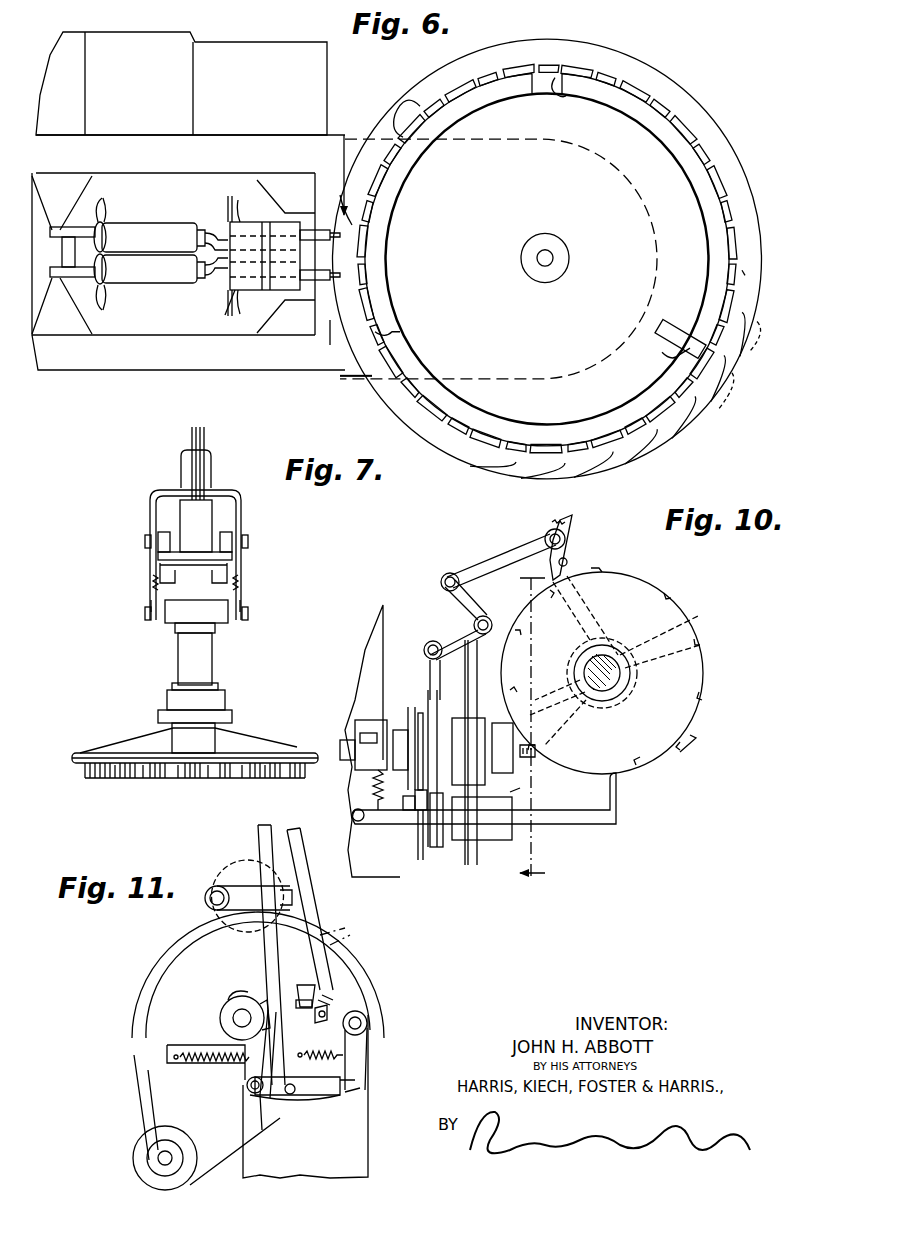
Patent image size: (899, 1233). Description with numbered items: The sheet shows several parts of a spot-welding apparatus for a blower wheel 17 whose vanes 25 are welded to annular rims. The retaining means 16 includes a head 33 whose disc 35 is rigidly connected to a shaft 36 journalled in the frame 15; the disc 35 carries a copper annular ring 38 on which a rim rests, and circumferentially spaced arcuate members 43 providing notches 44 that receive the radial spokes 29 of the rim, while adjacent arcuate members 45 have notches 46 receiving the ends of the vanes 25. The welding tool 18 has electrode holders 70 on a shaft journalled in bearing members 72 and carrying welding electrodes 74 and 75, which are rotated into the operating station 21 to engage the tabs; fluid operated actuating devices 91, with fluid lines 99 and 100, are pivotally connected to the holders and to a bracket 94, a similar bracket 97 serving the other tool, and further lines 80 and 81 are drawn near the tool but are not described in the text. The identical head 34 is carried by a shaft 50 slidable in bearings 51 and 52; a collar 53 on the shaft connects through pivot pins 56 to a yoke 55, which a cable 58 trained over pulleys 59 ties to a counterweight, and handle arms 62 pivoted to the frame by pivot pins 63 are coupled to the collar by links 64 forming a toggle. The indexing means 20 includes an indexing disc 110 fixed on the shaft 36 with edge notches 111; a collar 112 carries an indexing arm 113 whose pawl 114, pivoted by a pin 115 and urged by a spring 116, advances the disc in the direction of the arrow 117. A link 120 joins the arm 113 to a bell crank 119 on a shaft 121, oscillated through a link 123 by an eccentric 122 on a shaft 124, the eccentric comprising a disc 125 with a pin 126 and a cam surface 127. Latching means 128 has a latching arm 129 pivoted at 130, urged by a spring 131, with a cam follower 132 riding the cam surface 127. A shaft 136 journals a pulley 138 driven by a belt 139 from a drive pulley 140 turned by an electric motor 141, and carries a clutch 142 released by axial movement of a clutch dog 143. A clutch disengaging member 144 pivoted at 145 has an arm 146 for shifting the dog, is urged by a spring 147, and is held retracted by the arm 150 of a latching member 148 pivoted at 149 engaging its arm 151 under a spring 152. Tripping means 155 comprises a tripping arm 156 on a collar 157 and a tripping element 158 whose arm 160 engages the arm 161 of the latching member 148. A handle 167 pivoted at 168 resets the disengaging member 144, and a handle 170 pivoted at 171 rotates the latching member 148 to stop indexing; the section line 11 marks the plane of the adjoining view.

In FIG. 6, the retaining means 16 is at (755, 138).
In FIG. 7, the retaining means 16 is at (262, 742).
In FIG. 6, the blower wheel 17 is at (680, 380).
In FIG. 6, the welding tool 18 is at (250, 320).
In FIG. 10, the indexing means 20 is at (578, 555).
In FIG. 6, the operating station 21 is at (344, 160).
In FIG. 6, the vanes 25 is at (572, 470).
In FIG. 6, the radial spokes 29 is at (655, 324).
In FIG. 6, the head 33 is at (700, 255).
In FIG. 7, the head 34 is at (108, 740).
In FIG. 6, the disc 35 is at (700, 215).
In FIG. 7, the disc 35 is at (74, 754).
In FIG. 10, the shaft 36 is at (625, 675).
In FIG. 11, the shaft 36 is at (340, 960).
In FIG. 6, the annular ring 38 is at (660, 78).
In FIG. 7, the annular ring 38 is at (142, 772).
In FIG. 6, the arcuate members 43 is at (725, 310).
In FIG. 6, the notches 44 is at (690, 360).
In FIG. 6, the arcuate members 45 is at (540, 432).
In FIG. 7, the arcuate members 45 is at (170, 775).
In FIG. 6, the notches 46 is at (638, 440).
In FIG. 7, the notches 46 is at (205, 775).
In FIG. 7, the shaft 50 is at (208, 664).
In FIG. 7, the bearing 51 is at (225, 698).
In FIG. 7, the bearing 52 is at (225, 575).
In FIG. 7, the collar 53 is at (225, 612).
In FIG. 7, the yoke 55 is at (242, 520).
In FIG. 7, the pivot pins 56 is at (250, 616).
In FIG. 7, the cable 58 is at (215, 478).
In FIG. 7, the pulleys 59 is at (206, 437).
In FIG. 7, the arms 62 is at (240, 586).
In FIG. 7, the pivot pins 63 is at (252, 538).
In FIG. 7, the links 64 is at (245, 600).
In FIG. 6, the electrode holders 70 is at (268, 285).
In FIG. 6, the bearing members 72 is at (300, 368).
In FIG. 6, the welding electrode 74 is at (331, 332).
In FIG. 6, the welding electrode 75 is at (337, 198).
In FIG. 6, the tube 80 is at (216, 247).
In FIG. 6, the tube 81 is at (238, 254).
In FIG. 6, the actuating devices 91 is at (158, 280).
In FIG. 6, the bracket 94 is at (65, 285).
In FIG. 6, the bracket 97 is at (30, 392).
In FIG. 6, the fluid line 99 is at (116, 300).
In FIG. 6, the fluid line 100 is at (200, 290).
In FIG. 10, the indexing disc 110 is at (698, 692).
In FIG. 10, the notches 111 is at (690, 750).
In FIG. 10, the collar 112 is at (674, 628).
In FIG. 10, the indexing arm 113 is at (580, 580).
In FIG. 10, the pawl 114 is at (575, 535).
In FIG. 10, the pin 115 is at (536, 537).
In FIG. 10, the spring 116 is at (548, 515).
In FIG. 10, the arrow 117 is at (664, 558).
In FIG. 10, the bell crank 119 is at (480, 612).
In FIG. 10, the link 120 is at (478, 575).
In FIG. 10, the shaft 121 is at (468, 620).
In FIG. 10, the eccentric 122 is at (418, 865).
In FIG. 11, the eccentric 122 is at (218, 884).
In FIG. 10, the link 123 is at (422, 662).
In FIG. 11, the link 123 is at (296, 897).
In FIG. 10, the shaft 124 is at (354, 770).
In FIG. 10, the disc 125 is at (416, 708).
In FIG. 10, the pin 126 is at (430, 790).
In FIG. 10, the cam surface 127 is at (420, 708).
In FIG. 10, the latching means 128 is at (585, 835).
In FIG. 10, the latching arm 129 is at (620, 818).
In FIG. 10, the pivot 130 is at (352, 820).
In FIG. 10, the spring 131 is at (370, 790).
In FIG. 10, the cam follower 132 is at (405, 810).
In FIG. 11, the shaft 136 is at (222, 1013).
In FIG. 10, the pulley 138 is at (466, 865).
In FIG. 11, the pulley 138 is at (165, 1045).
In FIG. 11, the belt 139 is at (136, 1110).
In FIG. 11, the drive pulley 140 is at (150, 1162).
In FIG. 11, the electric motor 141 is at (135, 1148).
In FIG. 10, the clutch 142 is at (508, 775).
In FIG. 11, the clutch 142 is at (234, 990).
In FIG. 11, the clutch dog 143 is at (264, 998).
In FIG. 11, the clutch disengaging member 144 is at (276, 1100).
In FIG. 11, the pivot 145 is at (258, 1130).
In FIG. 11, the arm 146 is at (262, 1020).
In FIG. 11, the spring 147 is at (190, 1062).
In FIG. 11, the latching member 148 is at (365, 1065).
In FIG. 11, the pivot 149 is at (368, 1022).
In FIG. 11, the arm 150 is at (345, 1087).
In FIG. 11, the arm 151 is at (322, 1100).
In FIG. 11, the spring 152 is at (318, 1060).
In FIG. 11, the tripping means 155 is at (335, 1005).
In FIG. 10, the tripping arm 156 is at (565, 698).
In FIG. 10, the collar 157 is at (715, 640).
In FIG. 10, the tripping element 158 is at (565, 724).
In FIG. 11, the arm 160 is at (335, 988).
In FIG. 11, the arm 161 is at (335, 1018).
In FIG. 11, the handle 167 is at (268, 945).
In FIG. 11, the pivotal connection 168 is at (320, 1102).
In FIG. 11, the handle 170 is at (325, 915).
In FIG. 11, the pivotal connection 171 is at (370, 1045).
In FIG. 10, the section line 11 is at (539, 727).
In FIG. 10, the frame 15 is at (383, 870).
In FIG. 11, the frame 15 is at (360, 1160).